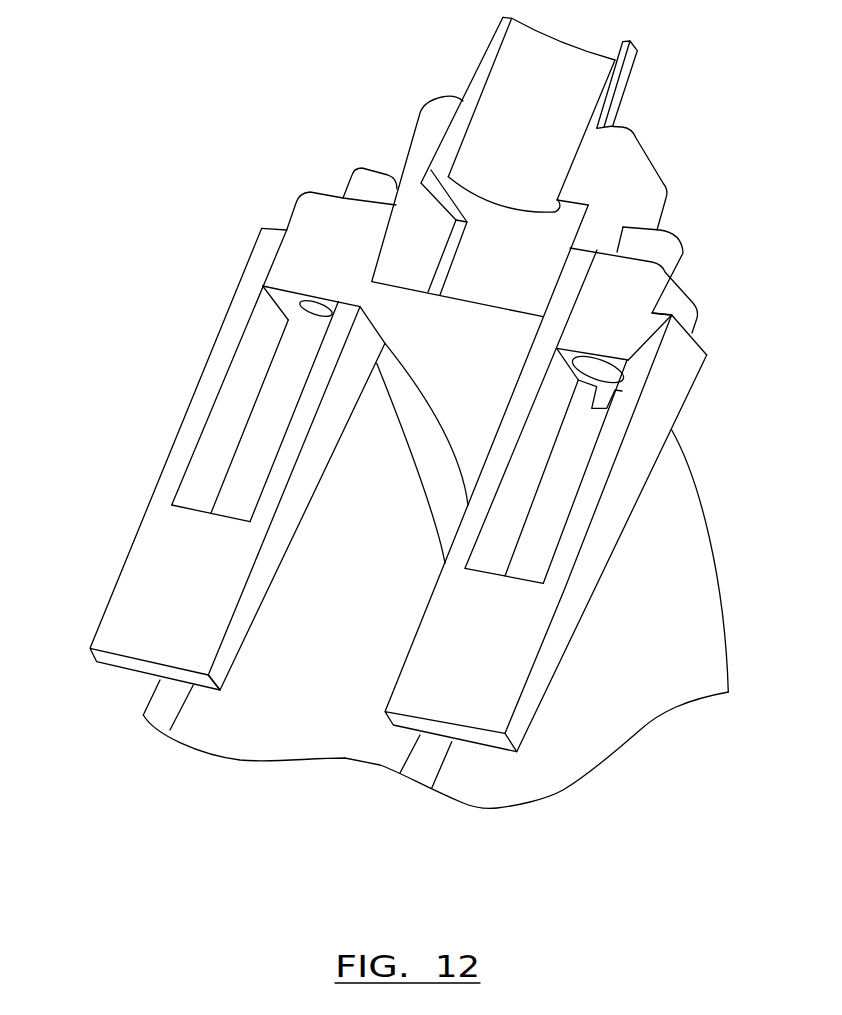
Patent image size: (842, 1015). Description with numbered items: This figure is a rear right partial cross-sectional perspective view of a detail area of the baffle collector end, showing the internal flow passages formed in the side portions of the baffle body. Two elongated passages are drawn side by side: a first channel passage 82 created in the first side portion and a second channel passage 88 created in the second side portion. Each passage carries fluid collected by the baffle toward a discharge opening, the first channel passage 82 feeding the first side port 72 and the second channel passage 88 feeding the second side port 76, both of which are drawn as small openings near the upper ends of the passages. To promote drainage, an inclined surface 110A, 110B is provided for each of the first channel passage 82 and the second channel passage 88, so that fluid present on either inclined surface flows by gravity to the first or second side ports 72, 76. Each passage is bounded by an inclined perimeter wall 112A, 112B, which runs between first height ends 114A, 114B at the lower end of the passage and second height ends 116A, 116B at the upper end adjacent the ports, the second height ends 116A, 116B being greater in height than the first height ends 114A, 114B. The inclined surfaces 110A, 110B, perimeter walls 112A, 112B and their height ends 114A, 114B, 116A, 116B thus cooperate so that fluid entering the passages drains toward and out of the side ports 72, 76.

The first side port 72 is at (612, 378).
The second side port 76 is at (311, 313).
The first channel passage 82 is at (552, 505).
The second channel passage 88 is at (237, 493).
The inclined surface 110A is at (570, 477).
The inclined surface 110B is at (250, 452).
The inclined perimeter wall 112A is at (588, 456).
The inclined perimeter wall 112B is at (253, 343).
The first height end 114A is at (518, 569).
The first height end 114B is at (197, 500).
The second height end 116A is at (631, 356).
The second height end 116B is at (283, 286).